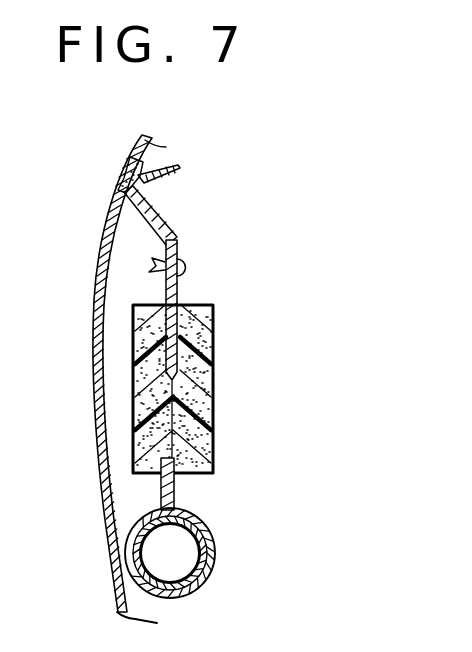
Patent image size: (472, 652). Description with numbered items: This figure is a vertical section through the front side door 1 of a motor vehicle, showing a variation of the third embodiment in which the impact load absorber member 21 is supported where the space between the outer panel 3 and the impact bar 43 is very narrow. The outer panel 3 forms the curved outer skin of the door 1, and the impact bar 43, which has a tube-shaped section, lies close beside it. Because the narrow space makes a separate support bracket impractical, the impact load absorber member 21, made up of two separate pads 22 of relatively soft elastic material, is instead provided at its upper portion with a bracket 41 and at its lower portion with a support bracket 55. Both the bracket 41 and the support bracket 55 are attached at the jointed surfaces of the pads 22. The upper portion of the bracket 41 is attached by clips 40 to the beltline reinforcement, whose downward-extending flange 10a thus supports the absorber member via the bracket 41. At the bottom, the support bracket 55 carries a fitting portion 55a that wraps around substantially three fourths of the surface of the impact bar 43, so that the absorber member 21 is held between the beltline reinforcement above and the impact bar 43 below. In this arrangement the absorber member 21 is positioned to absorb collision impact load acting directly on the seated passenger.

The front side door 1 is at (88, 306).
The outer panel 3 is at (93, 367).
The flange 10a is at (170, 230).
The impact load absorber member 21 is at (222, 334).
The pads 22 is at (133, 415).
The clips 40 is at (186, 268).
The bracket 41 is at (180, 290).
The impact bar 43 is at (127, 546).
The support bracket 55 is at (178, 491).
The fitting portion 55a is at (215, 543).